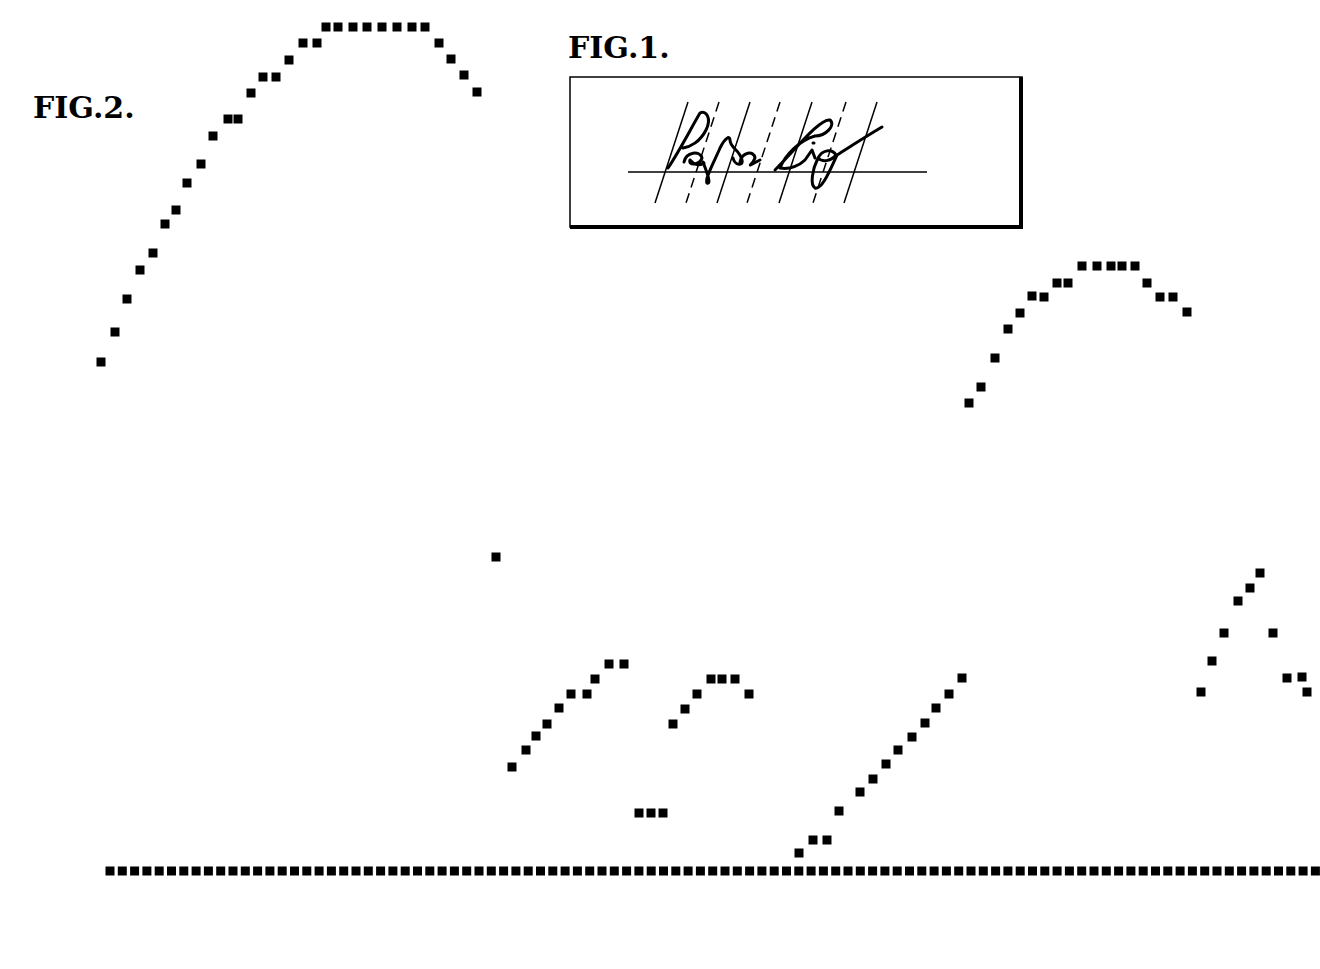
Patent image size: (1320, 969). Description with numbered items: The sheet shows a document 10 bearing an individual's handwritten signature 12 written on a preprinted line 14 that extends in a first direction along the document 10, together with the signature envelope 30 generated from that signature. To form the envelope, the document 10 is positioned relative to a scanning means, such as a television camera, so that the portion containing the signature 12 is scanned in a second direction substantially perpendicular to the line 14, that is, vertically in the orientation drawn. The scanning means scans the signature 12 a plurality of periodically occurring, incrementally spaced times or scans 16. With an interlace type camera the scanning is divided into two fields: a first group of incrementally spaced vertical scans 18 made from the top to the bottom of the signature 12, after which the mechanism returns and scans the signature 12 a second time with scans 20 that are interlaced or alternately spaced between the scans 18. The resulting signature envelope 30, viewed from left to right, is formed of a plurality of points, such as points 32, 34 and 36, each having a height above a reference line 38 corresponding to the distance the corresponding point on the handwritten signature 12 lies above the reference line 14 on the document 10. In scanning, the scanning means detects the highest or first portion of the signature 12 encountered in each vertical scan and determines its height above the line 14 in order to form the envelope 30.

In FIG. 1, the document 10 is at (773, 228).
In FIG. 1, the handwritten signature 12 is at (723, 133).
In FIG. 1, the preprinted line 14 is at (907, 173).
In FIG. 1, the scans 16 is at (812, 116).
In FIG. 1, the first group of scans 18 is at (795, 200).
In FIG. 1, the second group of scans 20 is at (688, 191).
In FIG. 2, the signature envelope 30 is at (810, 908).
In FIG. 2, the point 32 is at (100, 360).
In FIG. 2, the point 34 is at (113, 330).
In FIG. 2, the point 36 is at (123, 297).
In FIG. 2, the reference line 38 is at (105, 873).